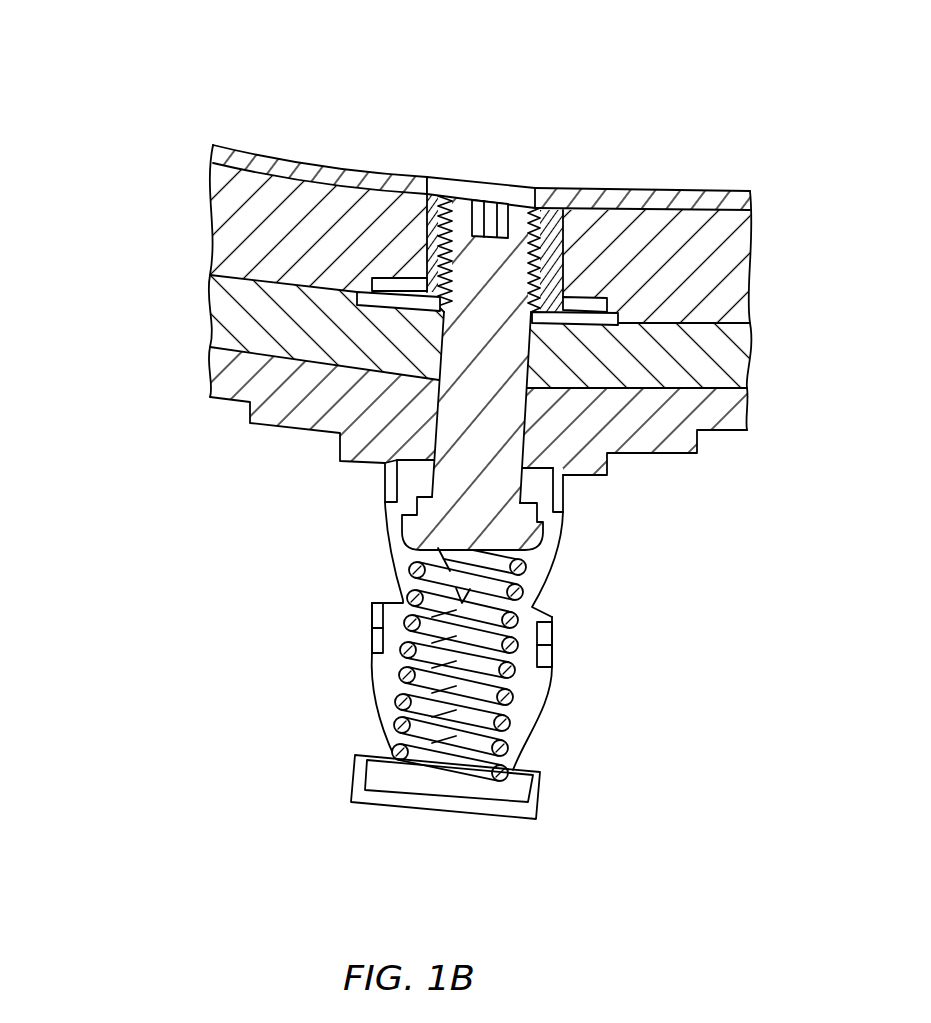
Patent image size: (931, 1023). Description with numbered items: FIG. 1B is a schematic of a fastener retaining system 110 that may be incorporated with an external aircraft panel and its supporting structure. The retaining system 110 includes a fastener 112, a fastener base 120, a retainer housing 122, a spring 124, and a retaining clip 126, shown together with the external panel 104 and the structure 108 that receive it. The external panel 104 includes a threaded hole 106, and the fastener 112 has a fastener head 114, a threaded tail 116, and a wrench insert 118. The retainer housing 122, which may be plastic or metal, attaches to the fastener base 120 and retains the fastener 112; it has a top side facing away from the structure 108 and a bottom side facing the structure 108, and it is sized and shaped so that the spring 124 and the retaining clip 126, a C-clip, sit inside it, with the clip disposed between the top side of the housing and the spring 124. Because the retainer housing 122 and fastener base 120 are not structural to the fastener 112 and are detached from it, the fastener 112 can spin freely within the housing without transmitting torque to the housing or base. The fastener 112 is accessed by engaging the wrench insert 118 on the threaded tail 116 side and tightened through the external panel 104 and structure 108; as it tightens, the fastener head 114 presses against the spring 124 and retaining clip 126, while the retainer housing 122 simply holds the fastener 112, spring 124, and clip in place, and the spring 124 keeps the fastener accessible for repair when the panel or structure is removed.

The external panel 104 is at (247, 217).
The threaded hole 106 is at (433, 212).
The structure 108 is at (247, 320).
The retaining system 110 is at (178, 98).
The fastener 112 is at (460, 473).
The fastener head 114 is at (428, 530).
The threaded tail 116 is at (552, 212).
The wrench insert 118 is at (492, 200).
The fastener base 120 is at (587, 462).
The retainer housing 122 is at (360, 713).
The spring 124 is at (430, 723).
The retaining clip 126 is at (490, 820).